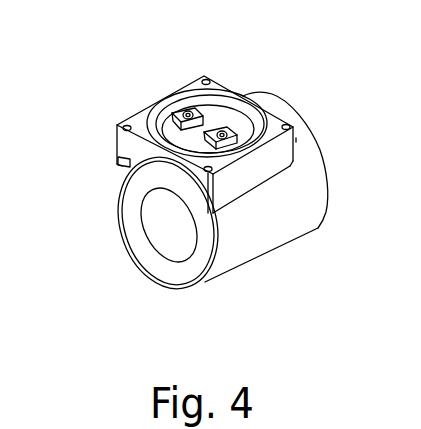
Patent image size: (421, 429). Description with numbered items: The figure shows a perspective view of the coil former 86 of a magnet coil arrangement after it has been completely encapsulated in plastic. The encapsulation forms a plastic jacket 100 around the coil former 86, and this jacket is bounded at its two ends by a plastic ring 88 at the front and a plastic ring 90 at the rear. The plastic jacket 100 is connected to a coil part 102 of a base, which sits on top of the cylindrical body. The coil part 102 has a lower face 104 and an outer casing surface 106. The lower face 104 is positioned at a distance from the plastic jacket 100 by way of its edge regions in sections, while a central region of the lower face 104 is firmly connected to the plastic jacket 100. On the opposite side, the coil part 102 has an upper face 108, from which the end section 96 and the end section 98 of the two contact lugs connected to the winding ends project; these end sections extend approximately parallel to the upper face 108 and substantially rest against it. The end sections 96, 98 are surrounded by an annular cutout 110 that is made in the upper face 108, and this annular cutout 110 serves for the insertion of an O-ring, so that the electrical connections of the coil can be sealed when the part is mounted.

The coil former 86 is at (209, 185).
The plastic ring 88 is at (190, 270).
The plastic ring 90 is at (336, 186).
The end section 96 is at (178, 114).
The end section 98 is at (220, 132).
The plastic jacket 100 is at (248, 236).
The coil part 102 is at (262, 102).
The lower face 104 is at (130, 166).
The outer casing surface 106 is at (130, 148).
The upper face 108 is at (141, 126).
The annular cutout 110 is at (296, 140).